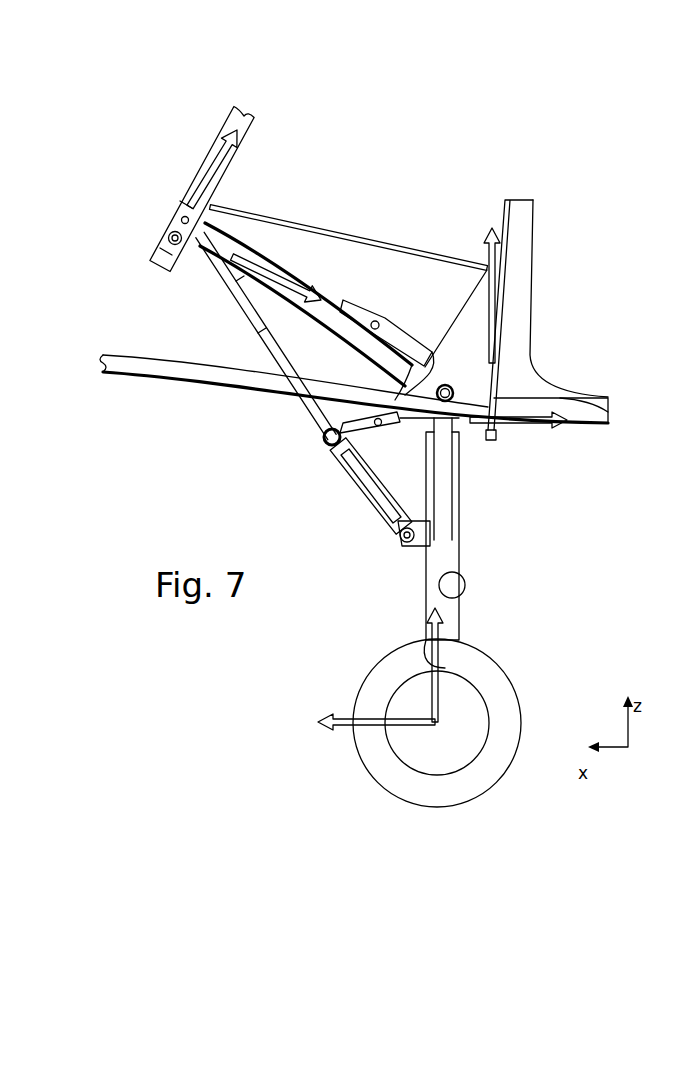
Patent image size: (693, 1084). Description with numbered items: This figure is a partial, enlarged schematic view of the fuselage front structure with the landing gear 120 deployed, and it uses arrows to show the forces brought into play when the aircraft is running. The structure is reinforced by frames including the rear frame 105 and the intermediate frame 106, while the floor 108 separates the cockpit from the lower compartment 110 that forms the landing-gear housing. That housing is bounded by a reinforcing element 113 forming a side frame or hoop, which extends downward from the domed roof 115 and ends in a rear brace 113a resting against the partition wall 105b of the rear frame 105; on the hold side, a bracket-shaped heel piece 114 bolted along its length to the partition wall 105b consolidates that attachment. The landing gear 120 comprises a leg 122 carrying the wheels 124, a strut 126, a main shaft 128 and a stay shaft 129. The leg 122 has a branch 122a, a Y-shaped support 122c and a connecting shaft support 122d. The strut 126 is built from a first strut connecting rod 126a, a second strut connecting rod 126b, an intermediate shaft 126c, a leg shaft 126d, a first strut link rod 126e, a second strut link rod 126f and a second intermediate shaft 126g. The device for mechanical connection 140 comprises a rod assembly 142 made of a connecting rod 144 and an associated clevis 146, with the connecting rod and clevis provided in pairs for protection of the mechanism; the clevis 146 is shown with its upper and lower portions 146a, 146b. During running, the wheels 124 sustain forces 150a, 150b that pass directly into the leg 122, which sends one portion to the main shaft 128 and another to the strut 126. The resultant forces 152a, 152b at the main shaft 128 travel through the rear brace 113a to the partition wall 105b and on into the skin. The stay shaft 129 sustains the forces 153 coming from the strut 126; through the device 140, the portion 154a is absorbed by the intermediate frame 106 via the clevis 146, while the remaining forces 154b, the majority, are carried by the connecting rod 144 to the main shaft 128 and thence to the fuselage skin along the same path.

The rear frame 105 is at (488, 432).
The partition wall 105b is at (568, 417).
The intermediate frame 106 is at (163, 263).
The floor 108 is at (375, 243).
The lower compartment 110 is at (146, 347).
The reinforcing element 113 is at (192, 378).
The rear brace 113a is at (477, 328).
The heel piece 114 is at (600, 412).
The domed roof 115 is at (417, 270).
The landing gear 120 is at (350, 505).
The leg 122 is at (450, 610).
The branch 122a is at (453, 638).
The Y-shaped support 122c is at (445, 530).
The connecting shaft support 122d is at (420, 543).
The wheels 124 is at (477, 790).
The strut 126 is at (248, 311).
The first strut connecting rod 126a is at (310, 415).
The second strut connecting rod 126b is at (354, 476).
The intermediate shaft 126c is at (313, 448).
The leg shaft 126d is at (400, 539).
The first strut link rod 126e is at (418, 437).
The second strut link rod 126f is at (431, 352).
The second intermediate shaft 126g is at (405, 432).
The main shaft 128 is at (510, 382).
The stay shaft 129 is at (181, 207).
The device for mechanical connection 140 is at (272, 243).
The rod assembly 142 is at (294, 266).
The connecting rod 144 is at (320, 318).
The clevis 146 is at (164, 228).
The pivot upper part 146a is at (180, 196).
The pivot lower part 146b is at (157, 250).
The force 150a is at (427, 668).
The force 150b is at (337, 725).
The resultant force 152a is at (478, 293).
The resultant force 152b is at (530, 423).
The forces 153 is at (261, 335).
The force portion 154a is at (218, 142).
The forces 154b is at (296, 307).